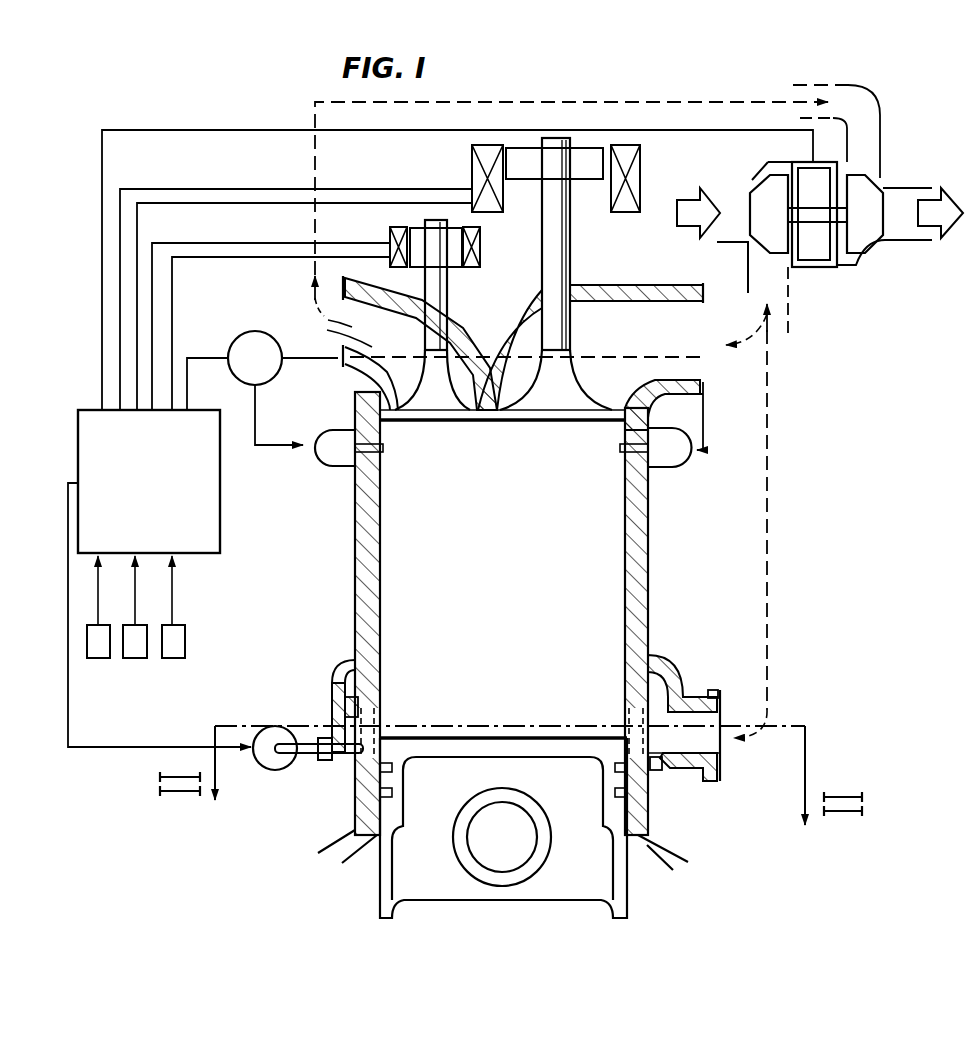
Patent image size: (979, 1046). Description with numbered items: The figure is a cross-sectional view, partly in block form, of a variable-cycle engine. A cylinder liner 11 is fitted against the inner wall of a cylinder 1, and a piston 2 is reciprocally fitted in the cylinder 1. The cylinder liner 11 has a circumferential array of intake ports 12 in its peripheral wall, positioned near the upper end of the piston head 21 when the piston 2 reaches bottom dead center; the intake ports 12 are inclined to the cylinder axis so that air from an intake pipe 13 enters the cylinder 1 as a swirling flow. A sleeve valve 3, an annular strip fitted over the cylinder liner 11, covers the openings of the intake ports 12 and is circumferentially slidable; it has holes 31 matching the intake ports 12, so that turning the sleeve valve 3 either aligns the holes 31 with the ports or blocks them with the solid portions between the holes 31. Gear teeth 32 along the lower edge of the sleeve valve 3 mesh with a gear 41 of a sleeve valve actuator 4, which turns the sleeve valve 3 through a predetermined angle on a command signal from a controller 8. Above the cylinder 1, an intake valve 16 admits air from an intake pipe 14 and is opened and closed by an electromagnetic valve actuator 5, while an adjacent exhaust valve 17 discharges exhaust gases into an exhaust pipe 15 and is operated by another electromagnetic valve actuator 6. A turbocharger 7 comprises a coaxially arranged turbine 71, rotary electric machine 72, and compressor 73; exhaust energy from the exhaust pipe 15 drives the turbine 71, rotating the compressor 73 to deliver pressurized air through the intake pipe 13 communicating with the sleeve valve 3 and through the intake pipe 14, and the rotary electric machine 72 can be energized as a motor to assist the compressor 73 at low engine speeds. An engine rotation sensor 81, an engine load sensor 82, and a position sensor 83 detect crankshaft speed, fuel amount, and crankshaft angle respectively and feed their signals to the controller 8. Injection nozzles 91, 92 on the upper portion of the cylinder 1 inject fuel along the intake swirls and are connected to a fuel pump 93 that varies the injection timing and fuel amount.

The cylinder 1 is at (658, 552).
The piston 2 is at (627, 878).
The sleeve valve 3 is at (342, 694).
The sleeve valve actuator 4 is at (278, 768).
The electromagnetic valve actuator 5 is at (592, 209).
The electromagnetic valve actuator 6 is at (461, 273).
The turbocharger 7 is at (820, 235).
The controller 8 is at (236, 495).
The cylinder liner 11 is at (664, 652).
The intake ports 12 is at (380, 722).
The intake pipe 13 is at (720, 702).
The intake pipe 14 is at (703, 364).
The exhaust pipe 15 is at (326, 323).
The intake valve 16 is at (557, 414).
The exhaust valve 17 is at (427, 413).
The piston head 21 is at (548, 708).
The holes 31 is at (333, 730).
The gear teeth 32 is at (352, 783).
The gear 41 is at (337, 768).
The turbine 71 is at (868, 193).
The rotary electric machine 72 is at (813, 255).
The compressor 73 is at (763, 197).
The engine rotation sensor 81 is at (176, 640).
The engine load sensor 82 is at (134, 658).
The position sensor 83 is at (101, 658).
The injection nozzle 91 is at (330, 452).
The injection nozzle 92 is at (682, 452).
The fuel pump 93 is at (254, 333).